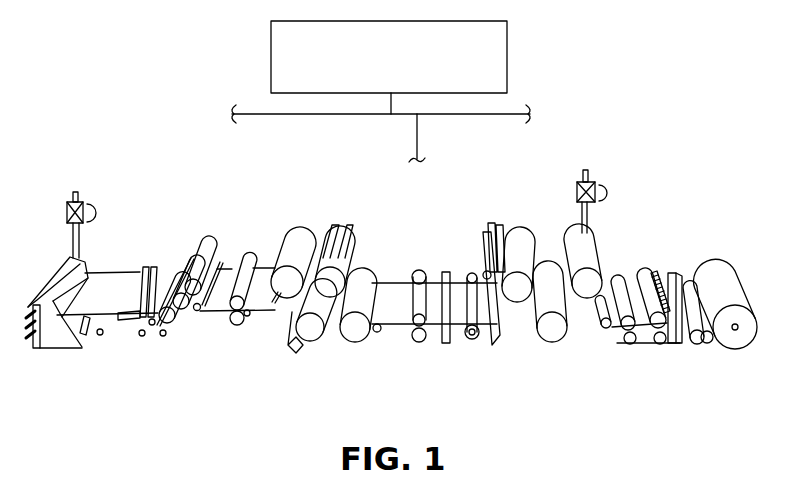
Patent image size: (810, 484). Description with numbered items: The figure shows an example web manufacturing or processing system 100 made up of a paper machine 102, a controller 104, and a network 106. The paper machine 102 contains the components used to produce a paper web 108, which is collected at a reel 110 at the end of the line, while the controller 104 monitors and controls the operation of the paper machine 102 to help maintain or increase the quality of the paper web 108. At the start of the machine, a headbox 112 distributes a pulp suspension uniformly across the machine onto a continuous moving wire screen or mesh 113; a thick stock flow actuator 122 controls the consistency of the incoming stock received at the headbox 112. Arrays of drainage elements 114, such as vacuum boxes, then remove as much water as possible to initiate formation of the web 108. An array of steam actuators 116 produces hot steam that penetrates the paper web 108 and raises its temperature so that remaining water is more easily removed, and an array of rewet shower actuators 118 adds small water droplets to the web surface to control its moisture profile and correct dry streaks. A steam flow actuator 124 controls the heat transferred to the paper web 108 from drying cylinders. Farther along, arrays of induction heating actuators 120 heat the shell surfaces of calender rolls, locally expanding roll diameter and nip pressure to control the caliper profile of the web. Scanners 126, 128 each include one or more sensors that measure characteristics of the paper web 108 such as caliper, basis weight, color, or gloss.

The web manufacturing or processing system 100 is at (162, 70).
The paper machine 102 is at (216, 193).
The controller 104 is at (507, 58).
The network 106 is at (291, 116).
The paper web 108 is at (208, 315).
The reel 110 is at (727, 346).
The headbox 112 is at (50, 279).
The wire screen or mesh 113 is at (100, 335).
The drainage elements 114 is at (182, 335).
The steam actuators 116 is at (295, 353).
The rewet shower actuators 118 is at (489, 222).
The induction heating actuators 120 is at (667, 345).
The thick stock flow actuator 122 is at (92, 208).
The steam flow actuator 124 is at (590, 182).
The scanner 126 is at (446, 343).
The scanner 128 is at (672, 273).